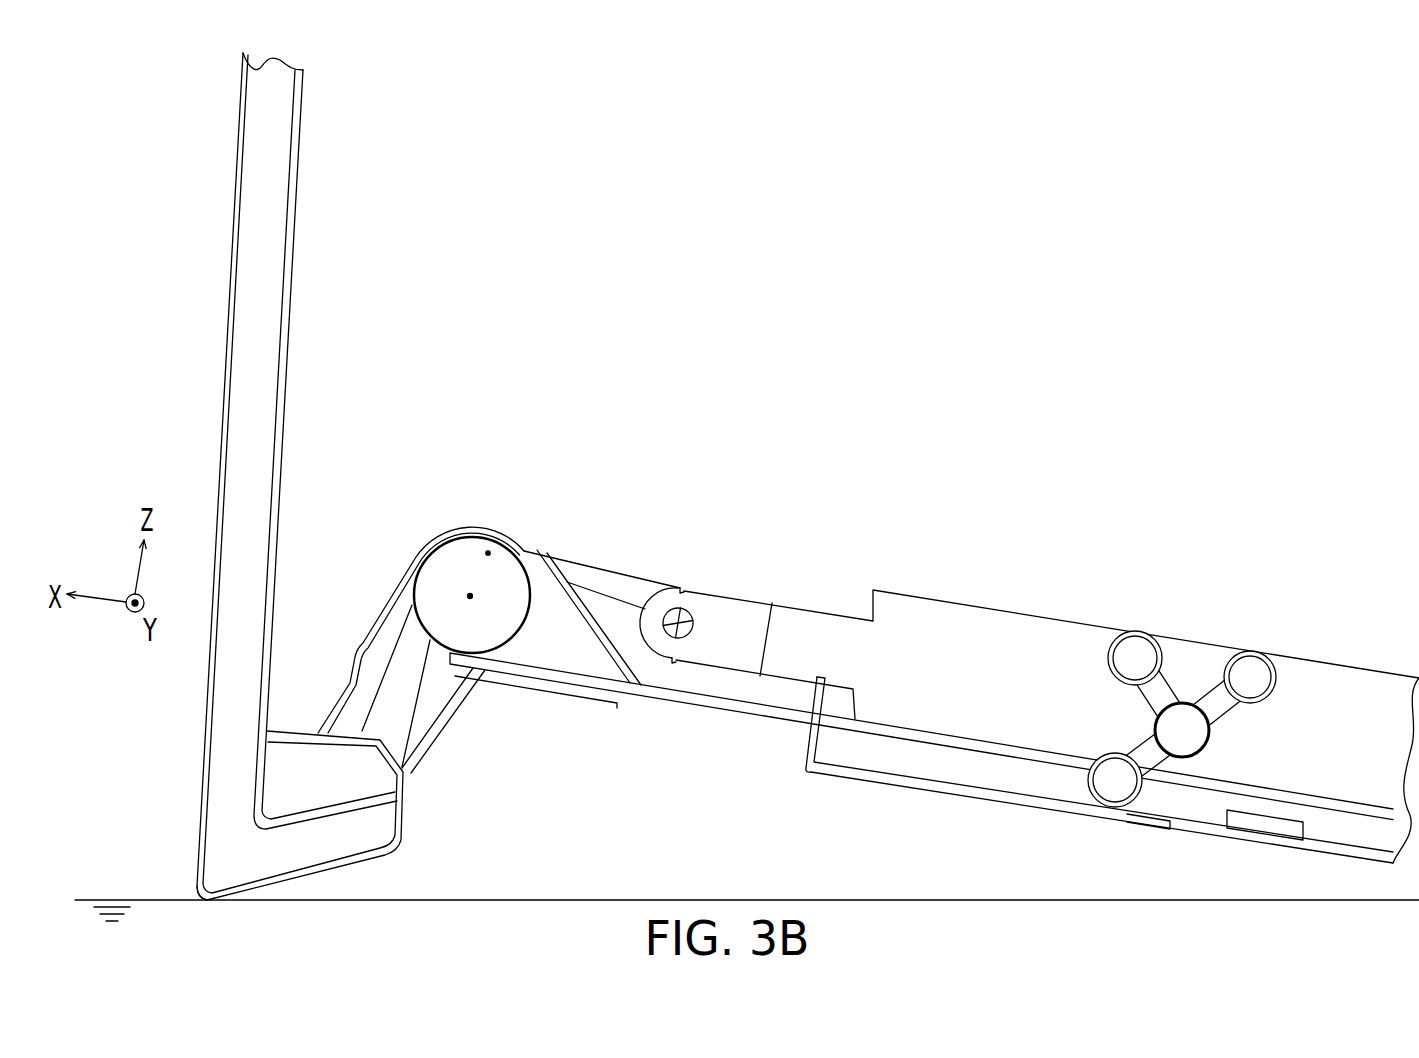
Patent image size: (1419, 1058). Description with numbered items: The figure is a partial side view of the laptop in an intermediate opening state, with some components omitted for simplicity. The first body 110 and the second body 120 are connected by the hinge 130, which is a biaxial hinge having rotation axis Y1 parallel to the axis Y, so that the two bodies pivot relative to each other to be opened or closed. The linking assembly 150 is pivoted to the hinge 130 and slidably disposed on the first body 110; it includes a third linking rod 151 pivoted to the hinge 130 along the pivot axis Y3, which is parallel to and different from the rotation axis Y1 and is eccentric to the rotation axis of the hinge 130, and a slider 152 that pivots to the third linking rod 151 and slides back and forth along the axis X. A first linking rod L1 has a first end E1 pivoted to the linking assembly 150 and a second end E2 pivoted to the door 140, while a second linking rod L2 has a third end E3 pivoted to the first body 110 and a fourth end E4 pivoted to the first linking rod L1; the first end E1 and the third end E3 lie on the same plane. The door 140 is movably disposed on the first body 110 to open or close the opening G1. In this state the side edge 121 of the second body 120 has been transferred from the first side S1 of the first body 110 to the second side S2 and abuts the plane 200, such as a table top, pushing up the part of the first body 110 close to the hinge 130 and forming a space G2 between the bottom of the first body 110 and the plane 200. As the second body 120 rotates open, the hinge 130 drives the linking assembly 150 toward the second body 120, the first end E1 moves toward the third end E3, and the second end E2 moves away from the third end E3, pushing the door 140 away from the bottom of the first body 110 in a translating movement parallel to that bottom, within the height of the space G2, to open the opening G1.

The first body 110 is at (750, 717).
The second body 120 is at (245, 293).
The side edge 121 is at (200, 900).
The hinge 130 is at (453, 733).
The door 140 is at (962, 797).
The linking assembly 150 is at (578, 204).
The third linking rod 151 is at (612, 580).
The slider 152 is at (810, 618).
The plane 200 is at (115, 898).
The first side S1 is at (997, 524).
The second side S2 is at (690, 782).
The opening G1 is at (880, 752).
The space G2 is at (548, 840).
The rotation axis Y1 is at (463, 590).
The pivot axis Y3 is at (483, 550).
The first end E1 is at (1277, 680).
The second end E2 is at (1138, 798).
The third end E3 is at (1112, 647).
The fourth end E4 is at (1203, 748).
The first linking rod L1 is at (1217, 713).
The second linking rod L2 is at (1165, 687).